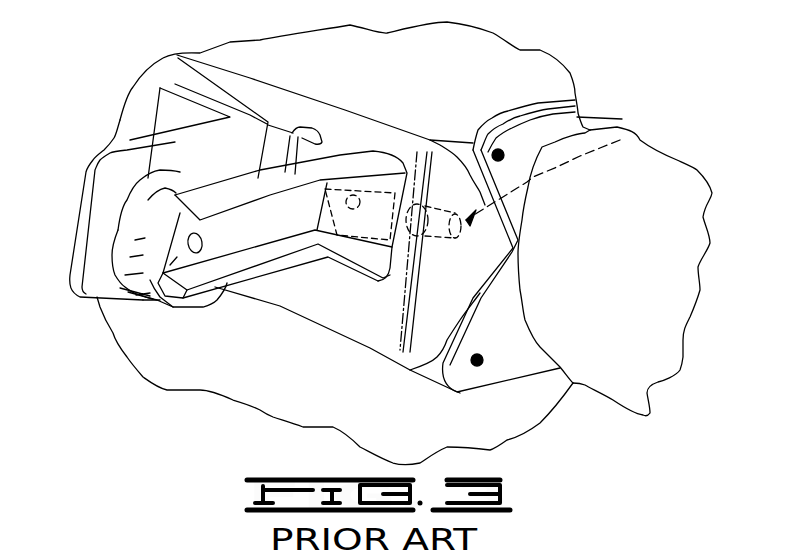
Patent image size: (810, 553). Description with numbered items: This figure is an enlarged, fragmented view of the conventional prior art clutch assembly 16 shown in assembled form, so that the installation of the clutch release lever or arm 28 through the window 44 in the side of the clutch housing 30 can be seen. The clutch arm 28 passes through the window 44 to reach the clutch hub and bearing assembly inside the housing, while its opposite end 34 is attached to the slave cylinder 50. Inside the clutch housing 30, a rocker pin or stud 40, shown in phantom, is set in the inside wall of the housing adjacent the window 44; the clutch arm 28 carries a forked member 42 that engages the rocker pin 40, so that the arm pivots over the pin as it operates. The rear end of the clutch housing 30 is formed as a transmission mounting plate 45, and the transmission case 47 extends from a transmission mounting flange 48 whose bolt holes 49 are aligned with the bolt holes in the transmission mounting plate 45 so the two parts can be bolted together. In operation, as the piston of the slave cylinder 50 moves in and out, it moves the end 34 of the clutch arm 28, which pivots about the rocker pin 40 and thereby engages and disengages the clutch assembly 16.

The clutch assembly 16 is at (603, 100).
The clutch release lever or arm 28 is at (370, 170).
The clutch housing 30 is at (525, 62).
The end of the clutch arm 34 is at (147, 297).
The rocker pin or stud 40 is at (630, 133).
The forked member 42 is at (417, 152).
The window 44 is at (175, 57).
The transmission mounting plate 45 is at (577, 90).
The transmission case 47 is at (687, 185).
The transmission mounting flange 48 is at (622, 119).
The bolt holes 49 is at (503, 148).
The slave cylinder 50 is at (117, 230).